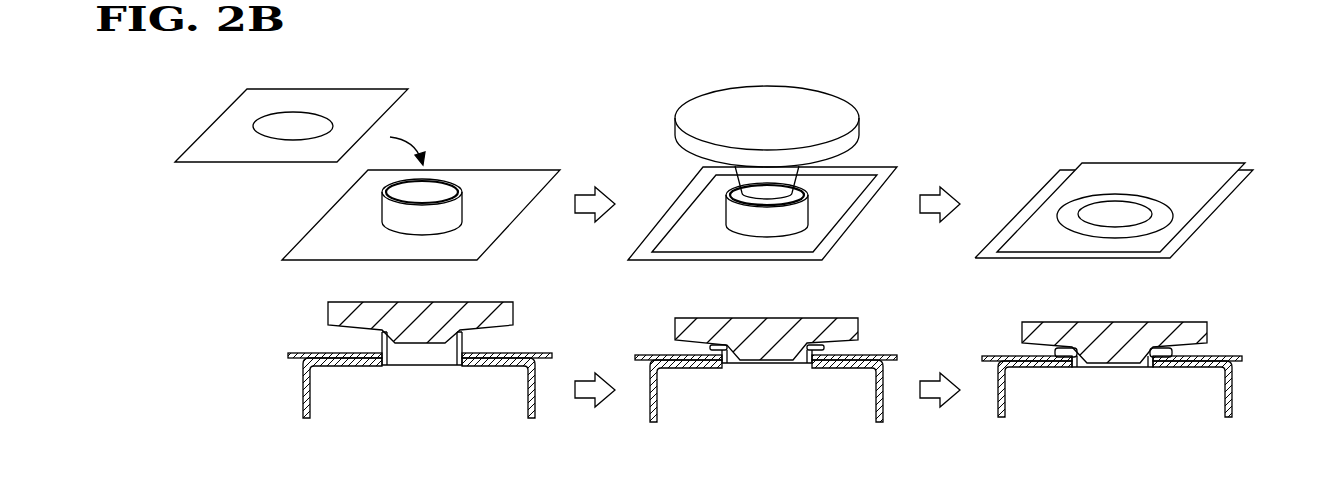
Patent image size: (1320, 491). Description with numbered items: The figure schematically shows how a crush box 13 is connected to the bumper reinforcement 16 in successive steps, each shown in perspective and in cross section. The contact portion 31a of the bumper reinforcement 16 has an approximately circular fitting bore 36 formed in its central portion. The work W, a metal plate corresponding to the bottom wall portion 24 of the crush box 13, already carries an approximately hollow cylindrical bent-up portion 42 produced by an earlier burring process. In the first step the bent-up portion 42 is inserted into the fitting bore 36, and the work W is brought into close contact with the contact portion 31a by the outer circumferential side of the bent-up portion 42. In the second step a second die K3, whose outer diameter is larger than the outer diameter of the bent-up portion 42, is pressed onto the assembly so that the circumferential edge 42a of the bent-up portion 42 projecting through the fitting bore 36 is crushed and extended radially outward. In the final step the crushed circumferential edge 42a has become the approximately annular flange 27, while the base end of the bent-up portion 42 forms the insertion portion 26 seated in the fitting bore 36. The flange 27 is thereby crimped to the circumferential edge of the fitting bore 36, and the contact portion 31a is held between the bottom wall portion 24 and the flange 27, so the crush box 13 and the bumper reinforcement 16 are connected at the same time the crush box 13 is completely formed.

The fitting bore 36 is at (270, 137).
The contact portion 31a is at (454, 83).
The bumper reinforcement 16 is at (723, 254).
The work W is at (522, 173).
The bent-up portion 42 is at (463, 200).
The circumferential edge 42a is at (460, 330).
The second die K3 is at (803, 93).
The crush box 13 is at (898, 167).
The insertion portion 26 is at (1103, 207).
The flange 27 is at (1163, 215).
The bottom wall portion 24 is at (1178, 367).